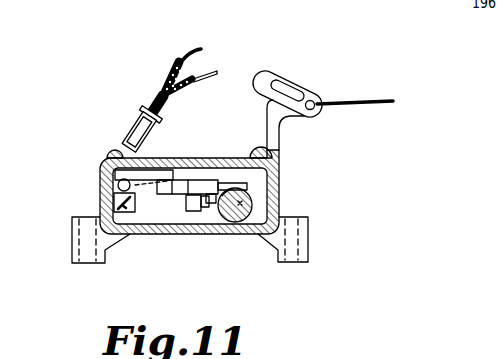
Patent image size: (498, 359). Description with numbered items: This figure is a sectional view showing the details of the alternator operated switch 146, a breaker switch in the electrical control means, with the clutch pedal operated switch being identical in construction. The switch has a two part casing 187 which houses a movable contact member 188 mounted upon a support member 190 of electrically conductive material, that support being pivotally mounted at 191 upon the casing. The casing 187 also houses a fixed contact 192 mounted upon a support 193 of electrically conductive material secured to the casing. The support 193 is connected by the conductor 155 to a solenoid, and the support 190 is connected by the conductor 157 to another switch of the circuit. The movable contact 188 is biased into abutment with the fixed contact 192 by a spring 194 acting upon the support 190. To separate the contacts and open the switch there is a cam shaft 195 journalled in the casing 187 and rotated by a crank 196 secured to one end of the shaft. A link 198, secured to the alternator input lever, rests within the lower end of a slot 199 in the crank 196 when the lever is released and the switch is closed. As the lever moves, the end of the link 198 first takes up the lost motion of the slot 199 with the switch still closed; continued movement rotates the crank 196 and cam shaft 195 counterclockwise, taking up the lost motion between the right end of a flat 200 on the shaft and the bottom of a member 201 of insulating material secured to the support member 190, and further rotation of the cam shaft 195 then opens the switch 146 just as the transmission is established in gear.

The alternator operated switch 146 is at (285, 186).
The conductor 155 is at (217, 72).
The conductor 157 is at (197, 48).
The two part casing 187 is at (160, 236).
The movable contact member 188 is at (205, 179).
The support member 190 is at (156, 173).
The pivot 191 is at (100, 183).
The fixed contact 192 is at (211, 204).
The support 193 is at (188, 200).
The spring 194 is at (122, 143).
The cam shaft 195 is at (240, 203).
The crank 196 is at (280, 128).
The link 198 is at (357, 99).
The slot 199 is at (284, 86).
The flat 200 is at (243, 223).
The member of insulating material 201 is at (236, 190).